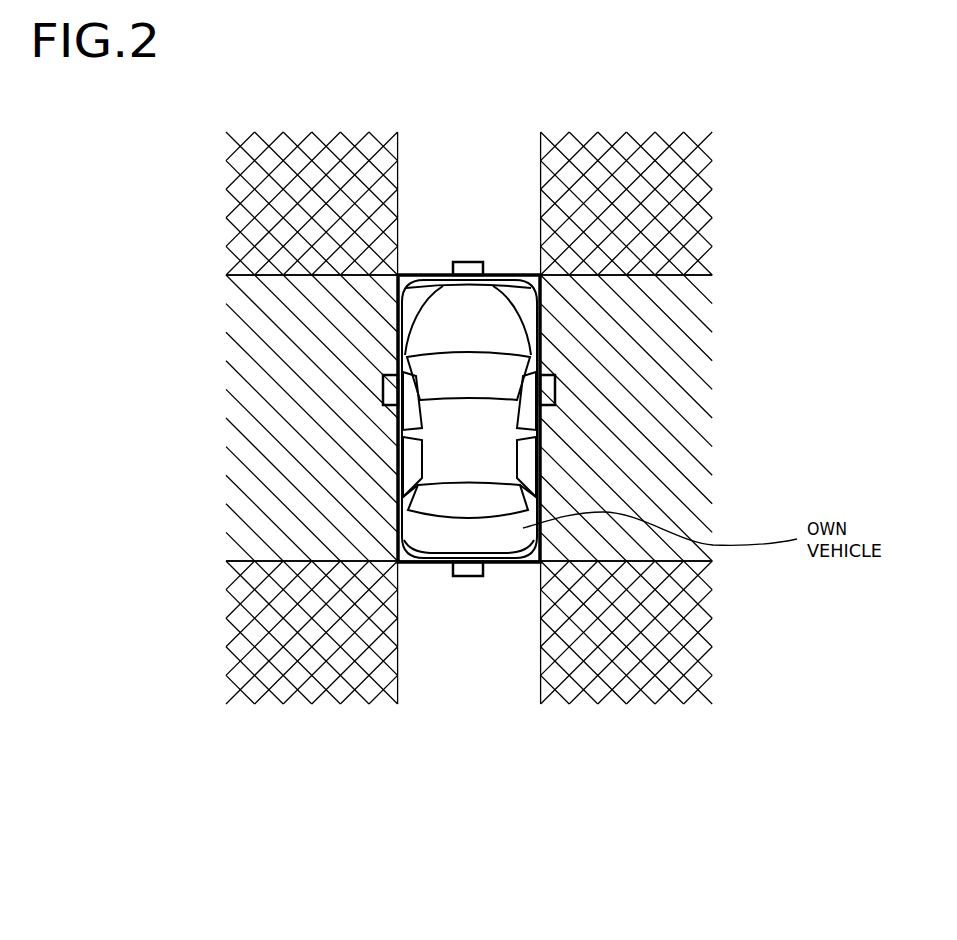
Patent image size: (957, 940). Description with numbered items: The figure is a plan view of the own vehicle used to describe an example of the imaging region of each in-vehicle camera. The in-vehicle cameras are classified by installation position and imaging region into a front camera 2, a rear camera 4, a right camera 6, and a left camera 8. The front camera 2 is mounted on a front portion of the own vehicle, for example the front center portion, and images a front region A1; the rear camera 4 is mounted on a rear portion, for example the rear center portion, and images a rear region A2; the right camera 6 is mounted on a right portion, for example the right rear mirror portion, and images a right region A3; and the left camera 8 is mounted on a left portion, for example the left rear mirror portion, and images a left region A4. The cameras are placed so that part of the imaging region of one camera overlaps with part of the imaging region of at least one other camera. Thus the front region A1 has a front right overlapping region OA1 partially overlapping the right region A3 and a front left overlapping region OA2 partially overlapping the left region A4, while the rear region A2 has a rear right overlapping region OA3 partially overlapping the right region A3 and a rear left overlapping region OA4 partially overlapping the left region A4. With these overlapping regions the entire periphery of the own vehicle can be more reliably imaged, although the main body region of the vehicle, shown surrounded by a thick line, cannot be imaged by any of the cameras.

The front camera 2 is at (466, 262).
The rear camera 4 is at (468, 578).
The right camera 6 is at (556, 380).
The left camera 8 is at (384, 380).
The front region A1 is at (712, 118).
The rear region A2 is at (712, 720).
The right region A3 is at (725, 132).
The left region A4 is at (212, 132).
The front right overlapping region OA1 is at (663, 188).
The front left overlapping region OA2 is at (283, 172).
The rear right overlapping region OA3 is at (653, 663).
The rear left overlapping region OA4 is at (284, 662).